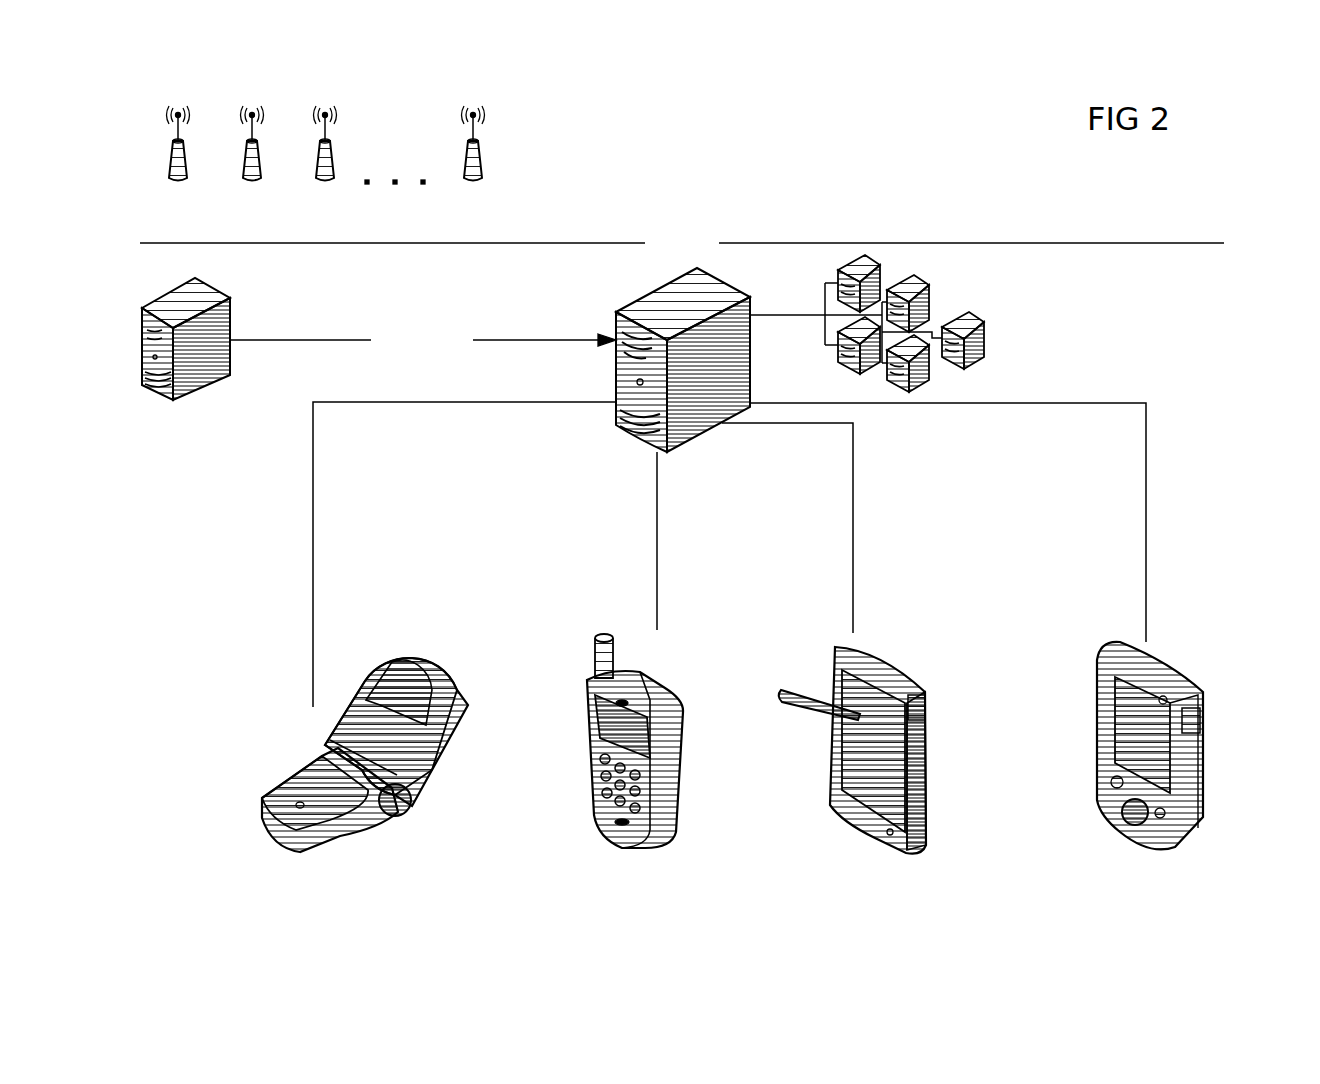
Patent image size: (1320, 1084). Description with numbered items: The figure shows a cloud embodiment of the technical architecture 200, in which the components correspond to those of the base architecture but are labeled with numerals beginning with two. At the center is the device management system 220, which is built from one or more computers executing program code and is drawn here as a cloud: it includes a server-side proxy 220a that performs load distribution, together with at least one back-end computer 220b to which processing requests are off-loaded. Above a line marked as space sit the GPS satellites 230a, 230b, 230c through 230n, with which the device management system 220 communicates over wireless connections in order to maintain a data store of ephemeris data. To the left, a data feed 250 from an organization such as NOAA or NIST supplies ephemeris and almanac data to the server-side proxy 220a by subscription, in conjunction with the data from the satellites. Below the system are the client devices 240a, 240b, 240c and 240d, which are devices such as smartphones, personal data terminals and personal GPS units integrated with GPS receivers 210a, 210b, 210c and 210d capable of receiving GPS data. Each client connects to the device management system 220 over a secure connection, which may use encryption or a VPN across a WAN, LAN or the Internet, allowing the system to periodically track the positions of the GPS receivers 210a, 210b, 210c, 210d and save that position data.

The technical architecture 200 is at (946, 145).
The GPS receiver 210a is at (419, 732).
The GPS receiver 210b is at (633, 656).
The GPS receiver 210c is at (940, 708).
The GPS receiver 210d is at (1218, 720).
The device management system 220 is at (887, 323).
The server-side proxy 220a is at (646, 360).
The back-end computer 220b is at (977, 324).
The GPS satellite 230a is at (177, 163).
The GPS satellite 230b is at (252, 163).
The GPS satellite 230c is at (324, 163).
The GPS satellite 230n is at (475, 167).
The client device 240a is at (387, 773).
The client device 240b is at (621, 761).
The client device 240c is at (876, 767).
The client device 240d is at (1175, 765).
The data feed 250 is at (186, 354).